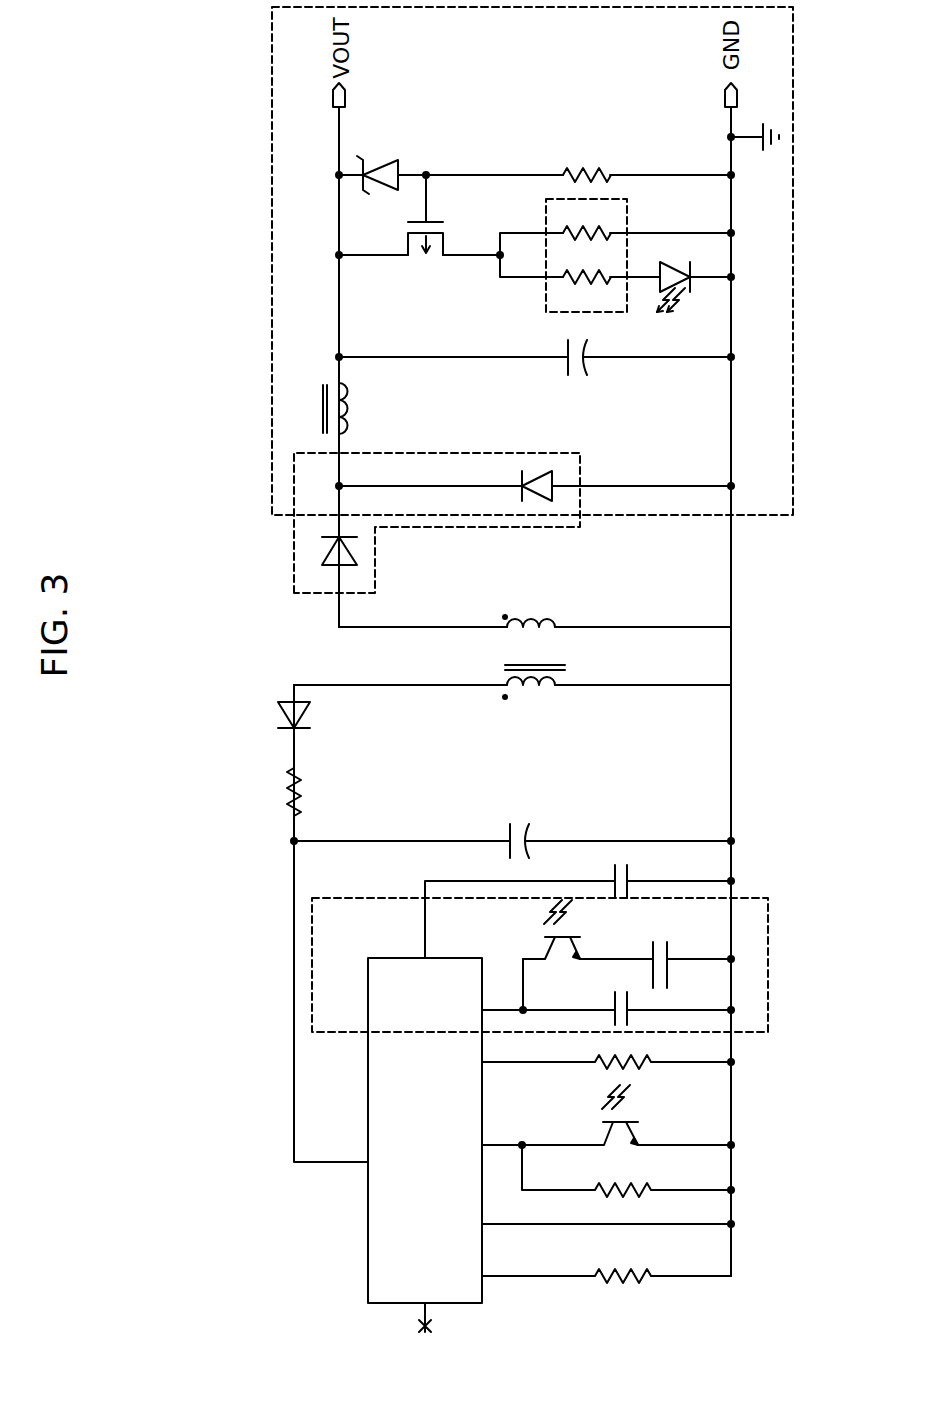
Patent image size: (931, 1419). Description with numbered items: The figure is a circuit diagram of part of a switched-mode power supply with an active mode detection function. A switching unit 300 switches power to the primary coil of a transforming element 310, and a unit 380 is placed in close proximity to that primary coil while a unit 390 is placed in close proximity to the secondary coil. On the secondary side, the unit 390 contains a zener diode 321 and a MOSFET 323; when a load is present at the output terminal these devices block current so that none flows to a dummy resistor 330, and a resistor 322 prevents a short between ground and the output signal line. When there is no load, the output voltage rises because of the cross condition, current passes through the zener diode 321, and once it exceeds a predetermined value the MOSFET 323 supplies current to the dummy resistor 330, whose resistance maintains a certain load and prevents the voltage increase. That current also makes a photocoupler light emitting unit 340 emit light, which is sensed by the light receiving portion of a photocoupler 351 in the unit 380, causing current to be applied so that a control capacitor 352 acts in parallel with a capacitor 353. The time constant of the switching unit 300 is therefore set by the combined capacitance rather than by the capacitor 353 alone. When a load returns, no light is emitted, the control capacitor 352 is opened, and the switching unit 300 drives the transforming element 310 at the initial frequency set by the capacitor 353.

The switching unit 300 is at (368, 1060).
The transforming element 310 is at (500, 650).
The zener diode 321 is at (383, 158).
The resistor 322 is at (577, 167).
The MOSFET 323 is at (415, 262).
The dummy resistor 330 is at (545, 208).
The photocoupler light emitting unit 340 is at (688, 302).
The photocoupler 351 is at (540, 932).
The control capacitor 352 is at (652, 950).
The capacitor 353 is at (613, 1000).
The unit 380 is at (312, 925).
The unit 390 is at (272, 385).